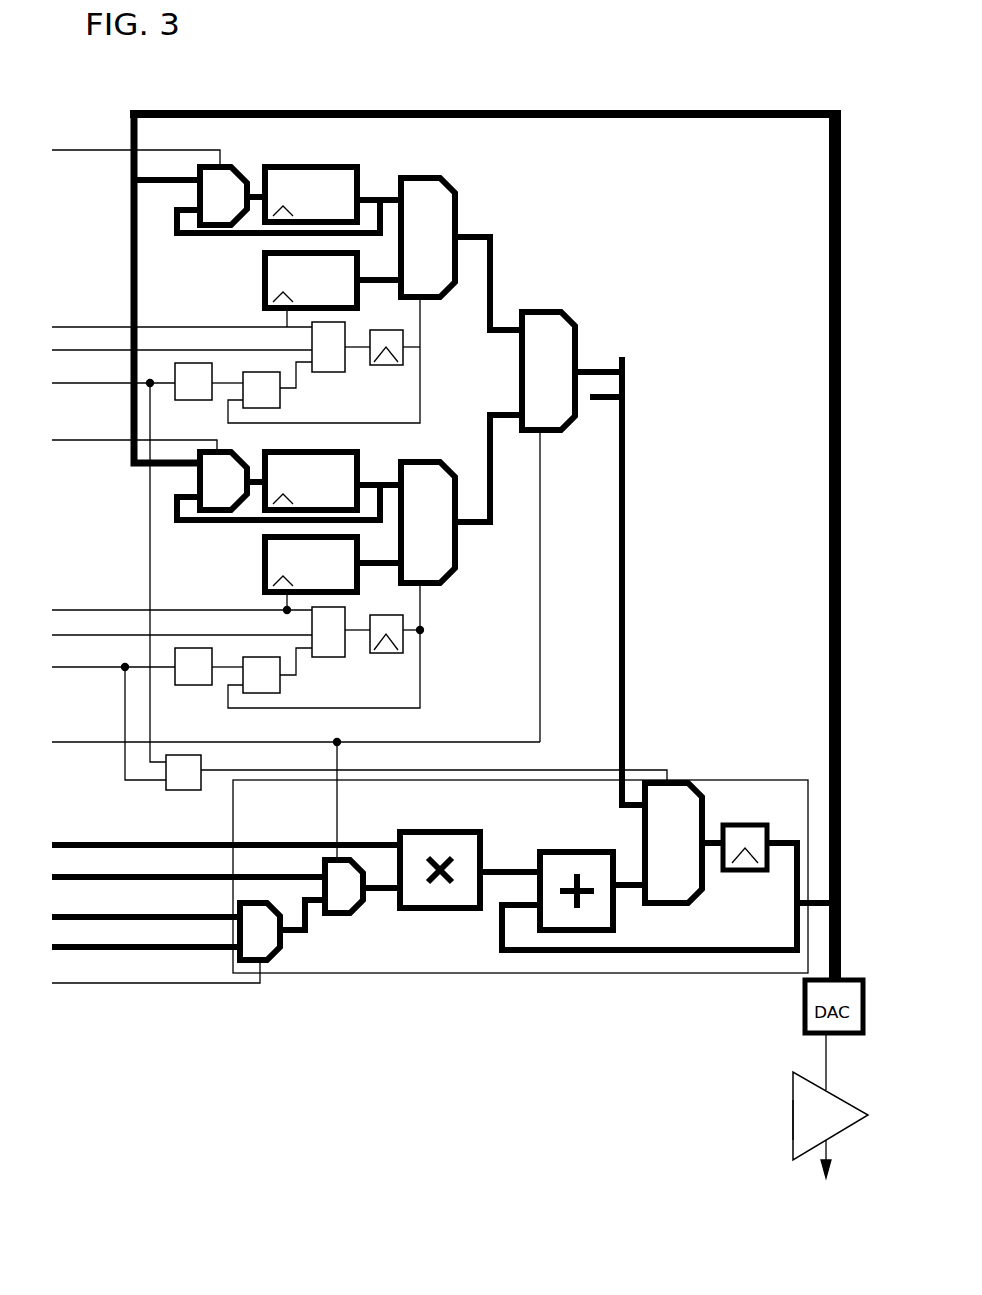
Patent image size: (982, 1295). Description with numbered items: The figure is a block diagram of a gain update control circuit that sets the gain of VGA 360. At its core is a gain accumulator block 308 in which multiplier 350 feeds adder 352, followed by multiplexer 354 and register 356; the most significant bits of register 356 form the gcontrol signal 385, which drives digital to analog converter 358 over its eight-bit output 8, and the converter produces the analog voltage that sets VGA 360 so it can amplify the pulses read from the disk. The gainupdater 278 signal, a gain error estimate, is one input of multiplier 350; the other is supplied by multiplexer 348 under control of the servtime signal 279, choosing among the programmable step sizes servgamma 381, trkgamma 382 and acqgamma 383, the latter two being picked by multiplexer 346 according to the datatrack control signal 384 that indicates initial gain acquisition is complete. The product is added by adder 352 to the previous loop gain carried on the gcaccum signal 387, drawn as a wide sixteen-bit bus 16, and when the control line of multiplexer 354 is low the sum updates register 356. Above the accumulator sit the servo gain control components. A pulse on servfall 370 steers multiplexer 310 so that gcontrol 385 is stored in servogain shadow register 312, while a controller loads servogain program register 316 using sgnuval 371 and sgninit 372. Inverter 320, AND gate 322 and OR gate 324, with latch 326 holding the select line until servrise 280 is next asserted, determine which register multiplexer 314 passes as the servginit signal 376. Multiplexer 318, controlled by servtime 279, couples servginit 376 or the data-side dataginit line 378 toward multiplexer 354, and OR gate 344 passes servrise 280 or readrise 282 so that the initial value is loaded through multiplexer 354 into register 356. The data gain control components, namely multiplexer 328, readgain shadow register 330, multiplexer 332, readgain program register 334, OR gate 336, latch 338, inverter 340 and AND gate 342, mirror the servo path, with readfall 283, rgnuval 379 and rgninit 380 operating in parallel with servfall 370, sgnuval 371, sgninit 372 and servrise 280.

The multiplexer 310 is at (230, 167).
The servogain shadow register 312 is at (292, 167).
The multiplexer 314 is at (412, 178).
The servogain program register 316 is at (265, 292).
The multiplexer 318 is at (540, 310).
The inverter 320 is at (196, 402).
The AND gate 322 is at (282, 400).
The OR gate 324 is at (325, 372).
The latch 326 is at (383, 367).
The read gain shadow multiplexer 328 is at (235, 452).
The readgain shadow register 330 is at (318, 452).
The dataginit multiplexer 332 is at (418, 462).
The readgain program register 334 is at (265, 583).
The OR gate 336 is at (348, 618).
The latch 338 is at (385, 655).
The NOT gate 340 is at (196, 687).
The AND gate 342 is at (282, 685).
The OR gate 344 is at (203, 762).
The gamma select multiplexer 346 is at (277, 952).
The multiplexer 348 is at (355, 910).
The multiplier 350 is at (420, 832).
The adder 352 is at (590, 848).
The multiplexer 354 is at (692, 900).
The register 356 is at (735, 825).
The digital to analog converter 358 is at (840, 1095).
The VGA 360 is at (792, 1122).
The servfall signal 370 is at (165, 148).
The sgnuval signal 371 is at (160, 325).
The sgninit signal 372 is at (200, 350).
The servginit signal 376 is at (495, 258).
The dataginit signal line 378 is at (475, 525).
The rgnuval signal 379 is at (137, 610).
The rgninit signal 380 is at (107, 638).
The servgamma signal 381 is at (172, 875).
The trkgamma signal 382 is at (178, 912).
The acqgamma signal 383 is at (172, 945).
The datatrack control signal 384 is at (175, 982).
The gcontrol signal 385 is at (842, 545).
The gcaccum signal 387 is at (595, 953).
The gainupdater signal 278 is at (165, 843).
The servtime signal 279 is at (113, 745).
The servrise signal 280 is at (120, 385).
The readrise signal line 282 is at (100, 672).
The readfall signal 283 is at (115, 441).
The gain accumulator block 308 is at (485, 975).
The gcaccum output line 16 is at (740, 937).
The gcontrol output line 8 is at (818, 950).